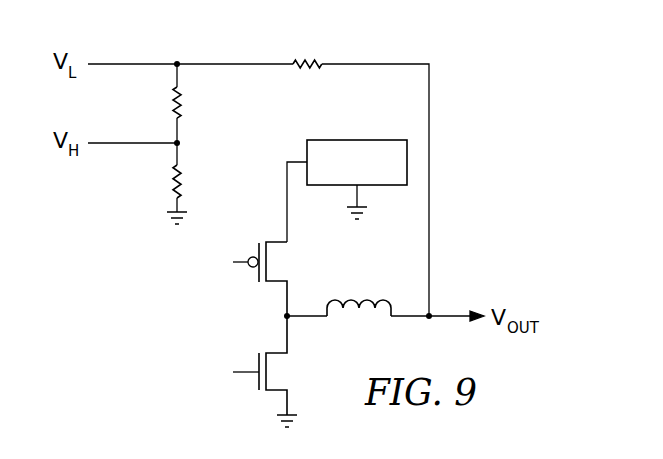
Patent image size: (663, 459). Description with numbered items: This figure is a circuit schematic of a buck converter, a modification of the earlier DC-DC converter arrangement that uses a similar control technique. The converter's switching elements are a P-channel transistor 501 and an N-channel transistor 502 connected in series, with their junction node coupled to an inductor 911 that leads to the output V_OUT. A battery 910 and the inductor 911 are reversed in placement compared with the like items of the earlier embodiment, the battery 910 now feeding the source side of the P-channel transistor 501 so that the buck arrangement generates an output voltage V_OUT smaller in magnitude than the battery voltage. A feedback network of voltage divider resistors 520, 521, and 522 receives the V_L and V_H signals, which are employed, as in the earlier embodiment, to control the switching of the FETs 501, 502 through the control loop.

The voltage divider resistor 520 is at (311, 57).
The voltage divider resistor 521 is at (181, 105).
The voltage divider resistor 522 is at (182, 182).
The battery 910 is at (380, 140).
The inductor 911 is at (368, 299).
The P-channel transistor 501 is at (256, 270).
The N-channel transistor 502 is at (256, 382).